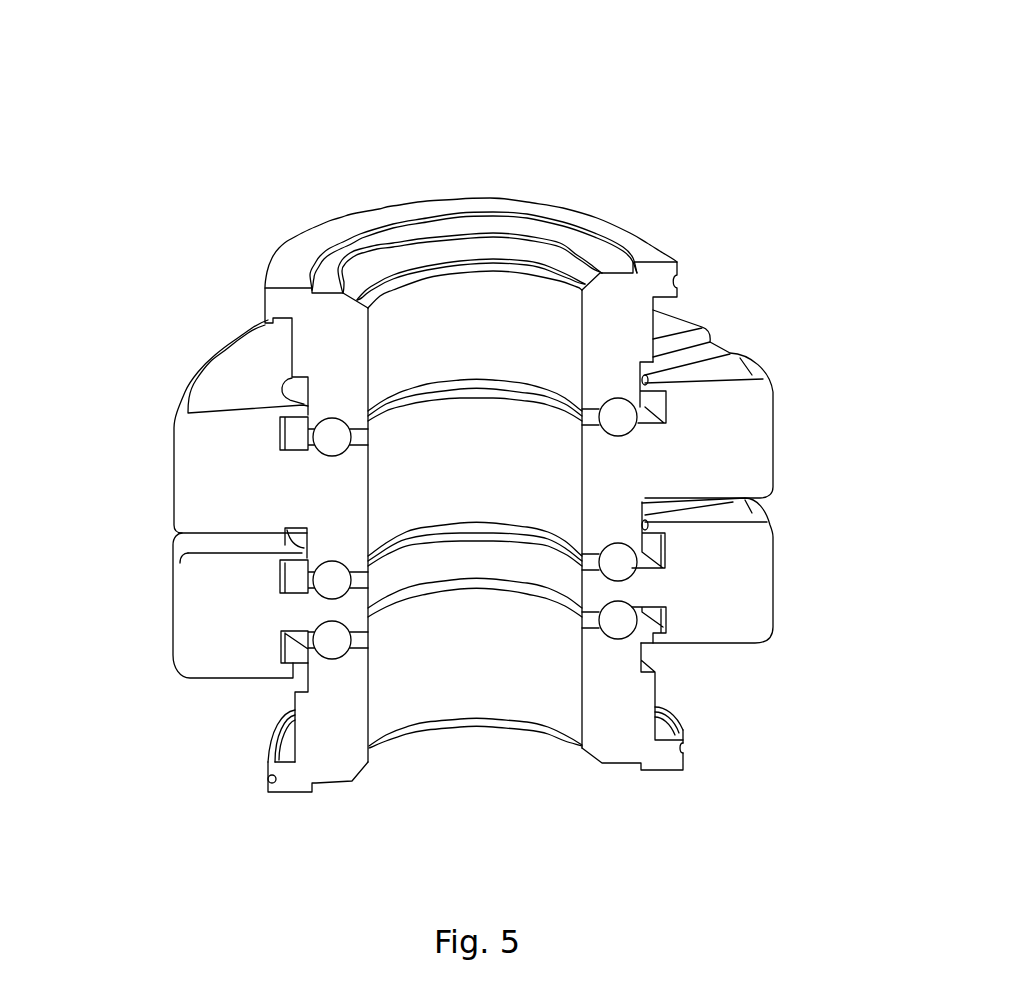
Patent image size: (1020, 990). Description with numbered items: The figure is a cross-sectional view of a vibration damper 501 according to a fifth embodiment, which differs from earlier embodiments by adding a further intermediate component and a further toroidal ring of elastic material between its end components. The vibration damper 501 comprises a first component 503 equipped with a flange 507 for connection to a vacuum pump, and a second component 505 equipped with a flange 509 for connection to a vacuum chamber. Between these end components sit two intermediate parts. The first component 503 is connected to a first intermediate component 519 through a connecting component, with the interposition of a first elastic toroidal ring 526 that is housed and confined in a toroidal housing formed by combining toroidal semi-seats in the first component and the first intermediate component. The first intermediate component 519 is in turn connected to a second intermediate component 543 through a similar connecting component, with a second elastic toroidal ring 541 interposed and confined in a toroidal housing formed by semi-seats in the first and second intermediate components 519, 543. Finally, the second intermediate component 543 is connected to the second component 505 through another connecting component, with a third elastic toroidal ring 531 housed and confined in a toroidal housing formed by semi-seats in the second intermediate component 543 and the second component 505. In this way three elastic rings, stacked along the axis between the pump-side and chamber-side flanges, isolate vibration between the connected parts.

The vibration damper 501 is at (745, 147).
The first component 503 is at (292, 740).
The second component 505 is at (318, 336).
The flange 507 is at (288, 795).
The flange 509 is at (644, 213).
The first intermediate component 519 is at (223, 603).
The first elastic toroidal ring 526 is at (615, 627).
The third elastic toroidal ring 531 is at (621, 423).
The second elastic toroidal ring 541 is at (621, 557).
The second intermediate component 543 is at (223, 458).